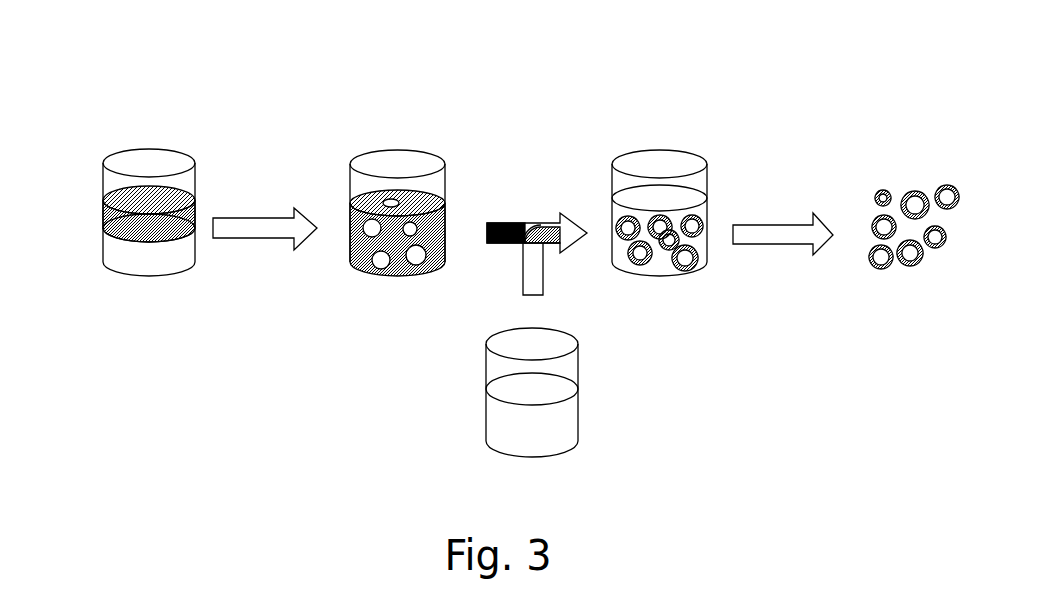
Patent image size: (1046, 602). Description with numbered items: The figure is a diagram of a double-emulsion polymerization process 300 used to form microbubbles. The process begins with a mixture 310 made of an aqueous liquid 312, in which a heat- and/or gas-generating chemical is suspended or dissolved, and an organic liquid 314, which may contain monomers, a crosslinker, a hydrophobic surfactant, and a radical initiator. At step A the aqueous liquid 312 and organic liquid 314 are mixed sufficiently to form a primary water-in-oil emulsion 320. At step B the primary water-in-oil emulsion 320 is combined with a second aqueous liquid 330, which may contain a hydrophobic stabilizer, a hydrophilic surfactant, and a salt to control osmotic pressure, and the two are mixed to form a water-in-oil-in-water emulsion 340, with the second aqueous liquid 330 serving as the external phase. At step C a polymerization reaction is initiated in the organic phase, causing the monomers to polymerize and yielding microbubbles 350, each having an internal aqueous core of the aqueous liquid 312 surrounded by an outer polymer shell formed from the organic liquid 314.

The double-emulsion polymerization process 300 is at (114, 42).
The mixture 310 is at (149, 148).
The aqueous liquid 312 is at (125, 263).
The organic liquid 314 is at (103, 218).
The primary water-in-oil emulsion 320 is at (396, 148).
The second aqueous liquid 330 is at (555, 453).
The water-in-oil-in-water emulsion 340 is at (660, 148).
The microbubbles 350 is at (917, 268).